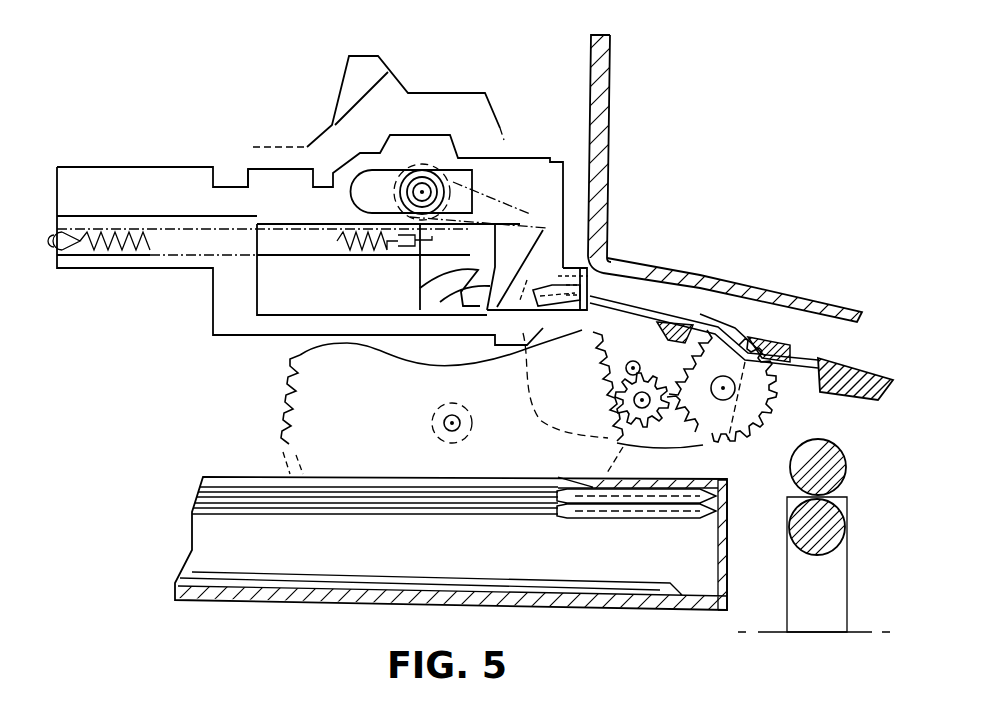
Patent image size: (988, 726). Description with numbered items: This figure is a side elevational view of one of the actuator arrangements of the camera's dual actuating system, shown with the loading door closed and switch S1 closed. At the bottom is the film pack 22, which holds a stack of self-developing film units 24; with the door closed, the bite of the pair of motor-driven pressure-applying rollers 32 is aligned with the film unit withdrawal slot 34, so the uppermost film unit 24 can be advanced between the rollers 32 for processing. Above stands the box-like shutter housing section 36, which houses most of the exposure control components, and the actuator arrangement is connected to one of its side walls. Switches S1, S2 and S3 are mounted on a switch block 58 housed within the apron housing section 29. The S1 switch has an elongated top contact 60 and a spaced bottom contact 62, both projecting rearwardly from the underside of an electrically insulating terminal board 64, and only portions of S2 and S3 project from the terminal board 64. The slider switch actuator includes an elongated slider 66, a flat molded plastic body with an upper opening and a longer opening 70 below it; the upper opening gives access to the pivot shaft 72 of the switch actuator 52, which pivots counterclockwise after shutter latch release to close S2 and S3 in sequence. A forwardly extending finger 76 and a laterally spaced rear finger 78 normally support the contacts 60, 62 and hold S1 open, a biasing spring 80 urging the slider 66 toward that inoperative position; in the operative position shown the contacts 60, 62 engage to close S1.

The film pack 22 is at (306, 603).
The self-developing film units 24 is at (545, 498).
The apron housing section 29 is at (812, 300).
The pressure-applying rollers 32 is at (833, 477).
The film unit withdrawal slot 34 is at (728, 492).
The shutter housing section 36 is at (612, 78).
The switch actuator 52 is at (430, 299).
The switch block 58 is at (884, 345).
The top contact 60 is at (600, 282).
The bottom contact 62 is at (602, 306).
The terminal board 64 is at (832, 393).
The elongated slider 66 is at (222, 182).
The opening 70 is at (292, 312).
The pivot shaft 72 is at (426, 182).
The finger 76 is at (577, 312).
The rear finger 78 is at (535, 297).
The biasing spring 80 is at (352, 257).